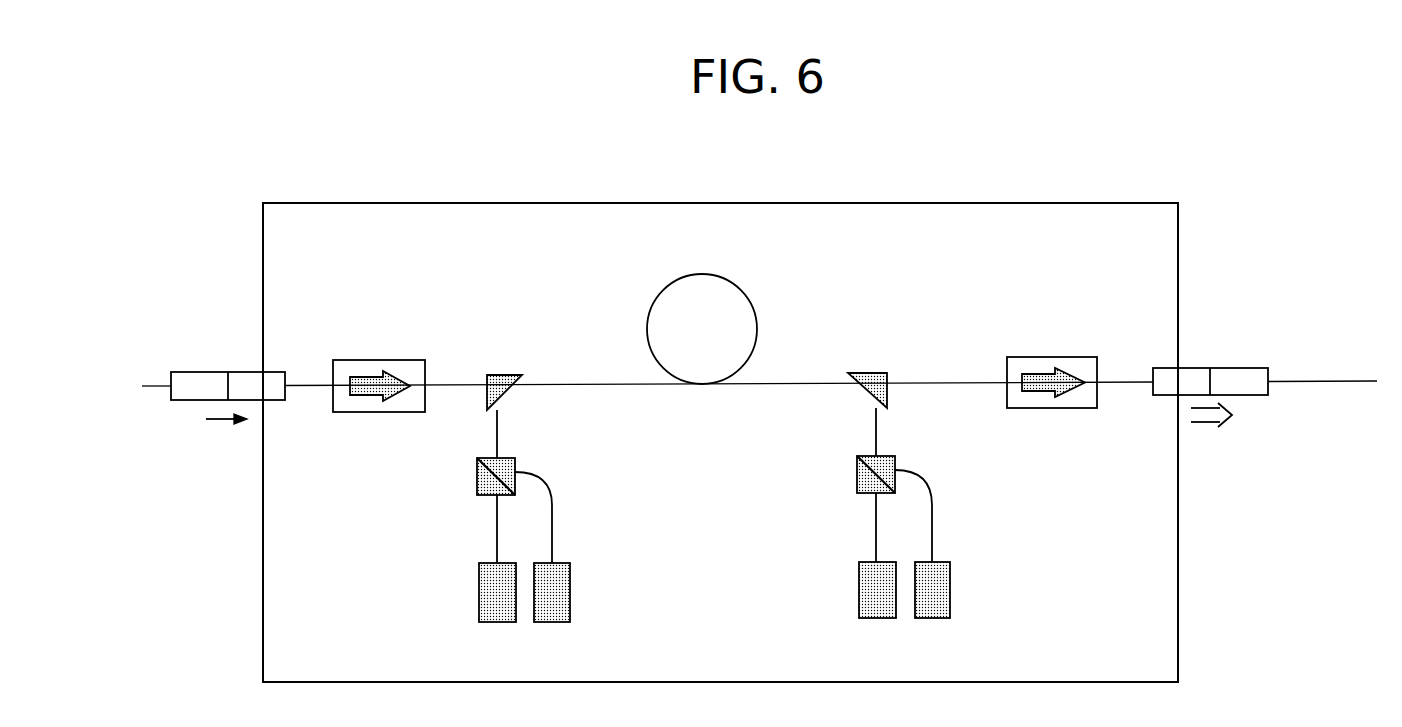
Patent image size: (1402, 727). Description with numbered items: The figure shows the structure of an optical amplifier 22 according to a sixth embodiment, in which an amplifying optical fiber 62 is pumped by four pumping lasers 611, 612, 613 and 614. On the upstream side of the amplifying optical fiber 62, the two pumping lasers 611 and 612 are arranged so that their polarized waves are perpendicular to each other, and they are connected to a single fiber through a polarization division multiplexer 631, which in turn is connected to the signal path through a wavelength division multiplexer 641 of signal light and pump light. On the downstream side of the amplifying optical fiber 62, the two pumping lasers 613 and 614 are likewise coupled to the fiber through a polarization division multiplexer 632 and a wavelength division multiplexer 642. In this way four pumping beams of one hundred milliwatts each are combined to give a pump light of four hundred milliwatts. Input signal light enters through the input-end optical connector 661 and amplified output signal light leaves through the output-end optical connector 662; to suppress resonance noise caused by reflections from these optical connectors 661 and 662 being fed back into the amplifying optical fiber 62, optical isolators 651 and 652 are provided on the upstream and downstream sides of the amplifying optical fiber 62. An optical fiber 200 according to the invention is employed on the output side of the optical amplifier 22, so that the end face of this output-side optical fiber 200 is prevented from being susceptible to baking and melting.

The optical amplifier 22 is at (1040, 203).
The optical fiber 200 is at (1130, 385).
The input-end optical connector 661 is at (248, 372).
The output-end optical connector 662 is at (1225, 368).
The optical isolator 651 is at (395, 360).
The optical isolator 652 is at (1032, 357).
The wavelength division multiplexer 641 is at (513, 375).
The wavelength division multiplexer 642 is at (868, 373).
The polarization division multiplexer 631 is at (477, 484).
The polarization division multiplexer 632 is at (857, 483).
The pumping laser 611 is at (479, 591).
The pumping laser 612 is at (572, 590).
The pumping laser 613 is at (859, 592).
The pumping laser 614 is at (952, 589).
The amplifying optical fiber 62 is at (721, 277).